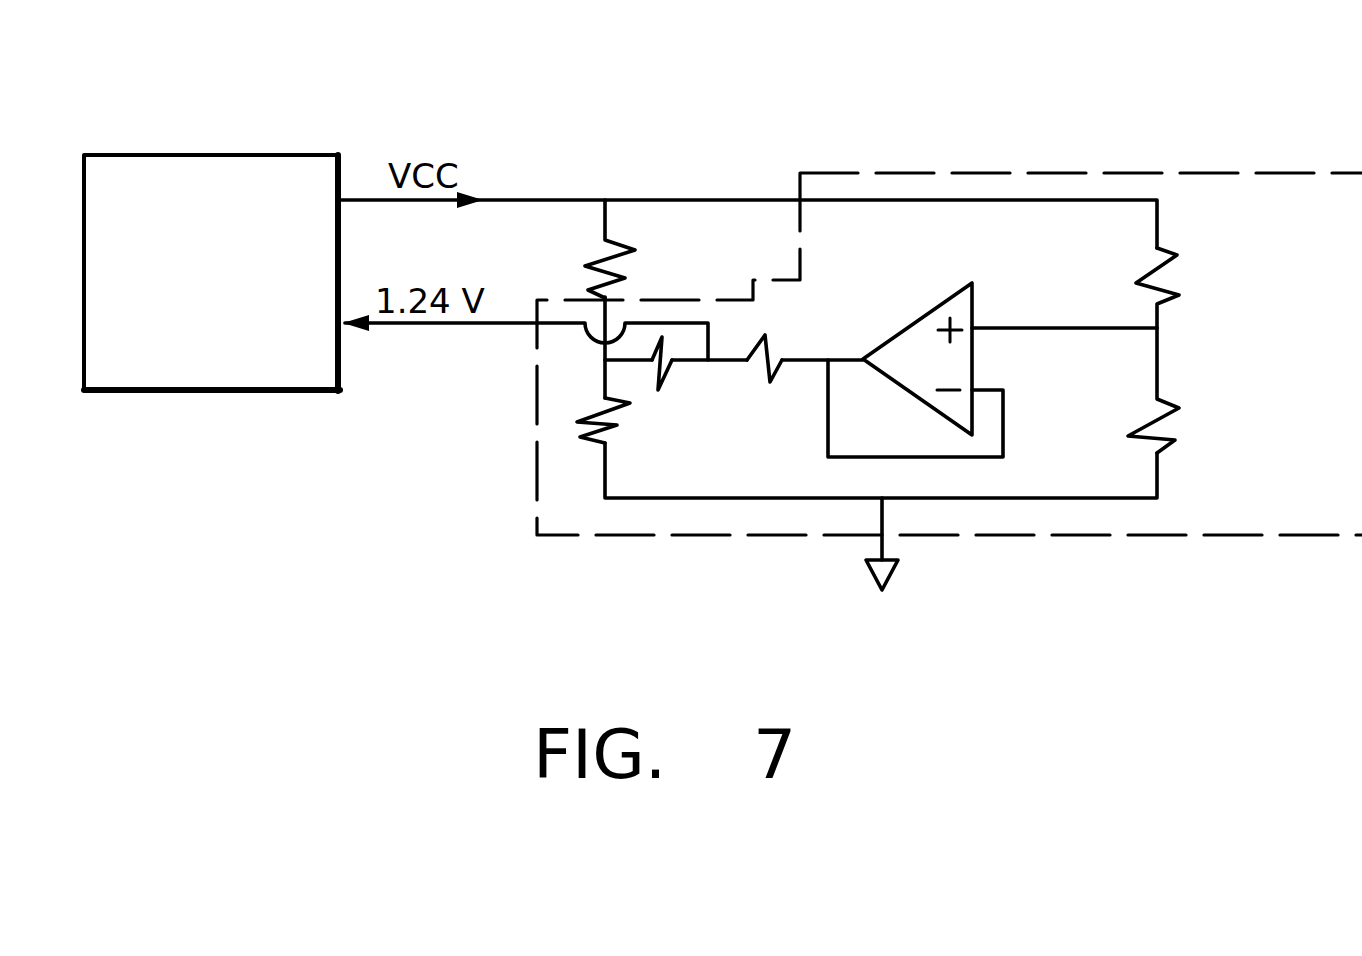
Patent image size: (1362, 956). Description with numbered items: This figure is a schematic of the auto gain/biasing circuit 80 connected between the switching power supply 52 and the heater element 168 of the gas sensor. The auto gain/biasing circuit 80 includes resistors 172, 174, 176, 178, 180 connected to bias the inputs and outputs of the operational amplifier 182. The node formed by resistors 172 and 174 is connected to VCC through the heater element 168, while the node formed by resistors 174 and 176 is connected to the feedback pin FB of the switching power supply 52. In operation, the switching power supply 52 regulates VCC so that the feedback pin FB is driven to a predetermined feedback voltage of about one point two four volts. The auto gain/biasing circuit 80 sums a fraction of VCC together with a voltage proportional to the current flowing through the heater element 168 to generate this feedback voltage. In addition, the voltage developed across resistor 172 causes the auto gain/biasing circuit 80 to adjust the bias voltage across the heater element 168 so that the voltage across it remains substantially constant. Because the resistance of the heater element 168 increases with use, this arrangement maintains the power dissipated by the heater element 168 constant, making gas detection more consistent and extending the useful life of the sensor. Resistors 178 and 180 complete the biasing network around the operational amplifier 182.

The switching power supply 52 is at (183, 152).
The auto gain/biasing circuit 80 is at (1104, 173).
The heater element 168 is at (638, 248).
The resistor 172 is at (613, 420).
The resistor 174 is at (668, 378).
The resistor 176 is at (770, 338).
The resistor 178 is at (1179, 257).
The resistor 180 is at (1180, 409).
The operational amplifier 182 is at (973, 347).